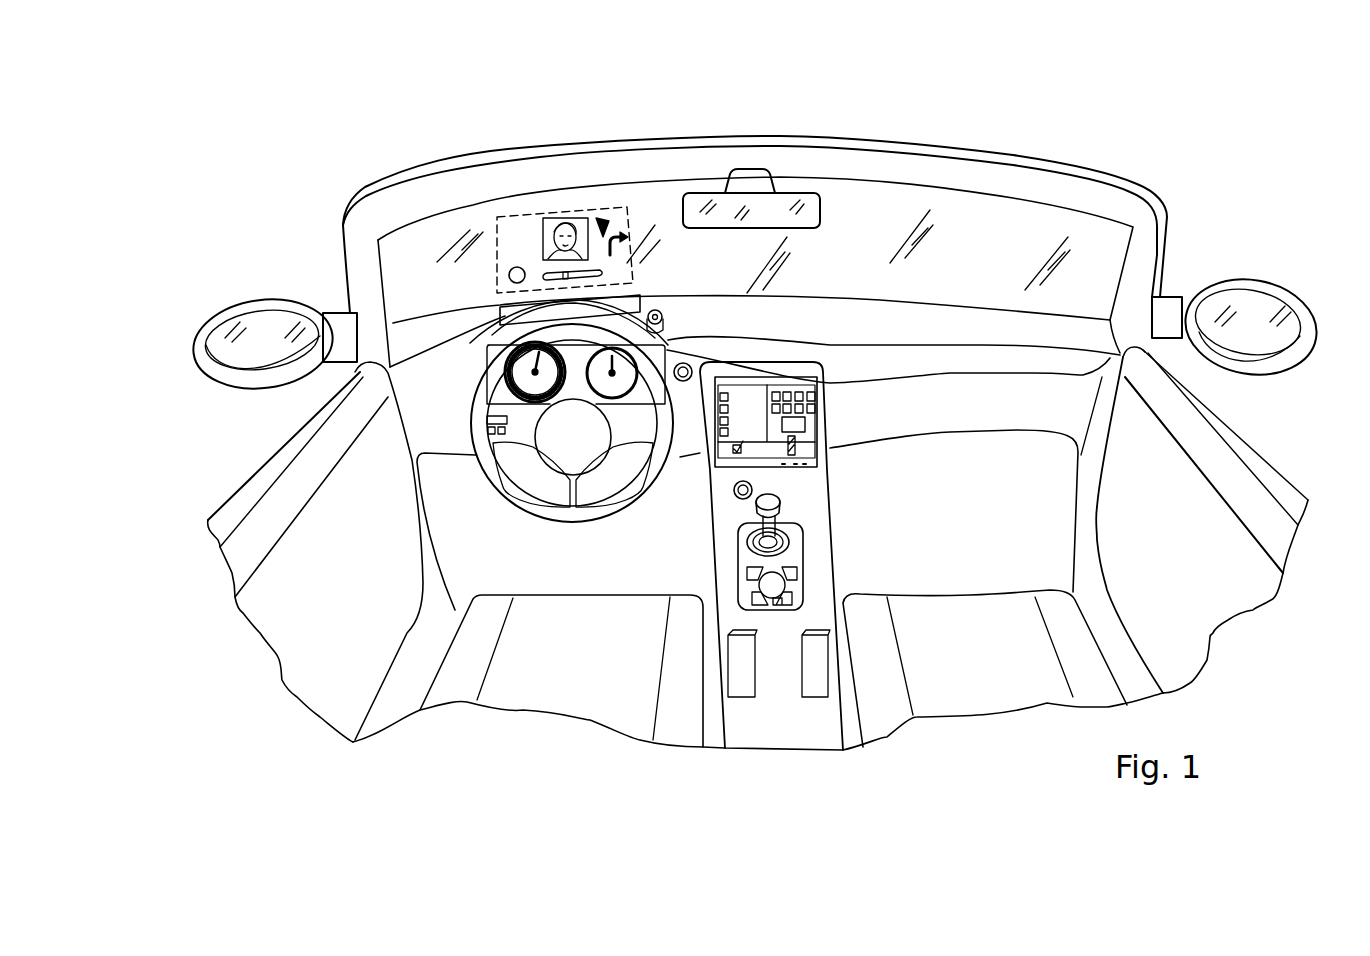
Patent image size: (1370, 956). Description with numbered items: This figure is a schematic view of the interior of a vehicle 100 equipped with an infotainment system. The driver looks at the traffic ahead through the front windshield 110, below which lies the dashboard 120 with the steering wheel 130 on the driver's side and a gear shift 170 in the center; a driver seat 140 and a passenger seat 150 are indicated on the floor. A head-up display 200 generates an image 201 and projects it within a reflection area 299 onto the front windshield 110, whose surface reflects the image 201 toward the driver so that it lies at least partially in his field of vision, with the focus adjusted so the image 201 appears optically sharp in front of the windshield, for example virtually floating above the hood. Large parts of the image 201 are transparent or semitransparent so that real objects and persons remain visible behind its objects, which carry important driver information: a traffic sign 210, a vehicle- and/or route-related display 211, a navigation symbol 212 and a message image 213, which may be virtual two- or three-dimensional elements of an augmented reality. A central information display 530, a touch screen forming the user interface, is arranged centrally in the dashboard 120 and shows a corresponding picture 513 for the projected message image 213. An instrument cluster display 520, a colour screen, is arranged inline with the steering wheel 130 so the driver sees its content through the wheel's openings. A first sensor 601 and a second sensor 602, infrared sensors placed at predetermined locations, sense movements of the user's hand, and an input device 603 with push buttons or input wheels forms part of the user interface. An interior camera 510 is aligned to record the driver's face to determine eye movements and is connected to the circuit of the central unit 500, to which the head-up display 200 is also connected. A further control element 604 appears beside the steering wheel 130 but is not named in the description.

The vehicle 100 is at (1003, 738).
The front windshield 110 is at (995, 205).
The dashboard 120 is at (667, 350).
The steering wheel 130 is at (515, 481).
The driver seat 140 is at (558, 642).
The passenger seat 150 is at (947, 642).
The gear shift 170 is at (780, 510).
The head-up display 200 is at (498, 317).
The image 201 is at (603, 222).
The traffic sign 210 is at (511, 270).
The vehicle- and/or route-related display 211 is at (603, 272).
The navigation symbol 212 is at (628, 237).
The message image 213 is at (573, 218).
The reflection area 299 is at (510, 215).
The central unit 500 is at (804, 528).
The interior camera 510 is at (663, 317).
The picture 513 is at (806, 425).
The instrument cluster display 520 is at (523, 373).
The central information display 530 is at (796, 384).
The first sensor 601 is at (739, 496).
The second sensor 602 is at (685, 383).
The input device 603 is at (803, 580).
The steering column control buttons 604 is at (487, 418).